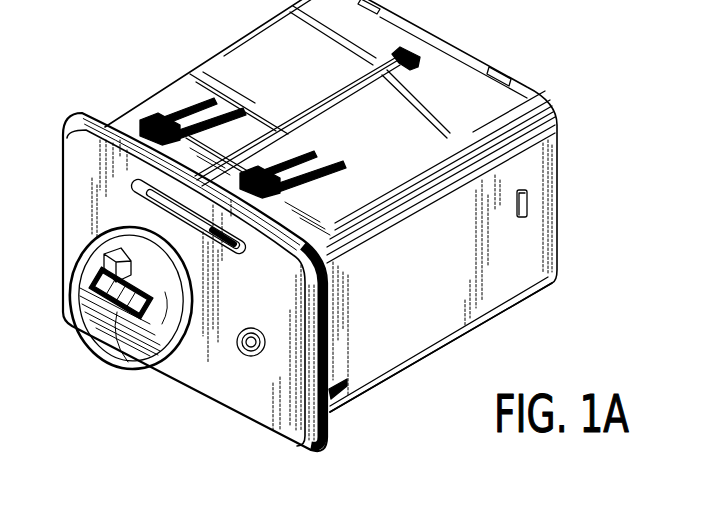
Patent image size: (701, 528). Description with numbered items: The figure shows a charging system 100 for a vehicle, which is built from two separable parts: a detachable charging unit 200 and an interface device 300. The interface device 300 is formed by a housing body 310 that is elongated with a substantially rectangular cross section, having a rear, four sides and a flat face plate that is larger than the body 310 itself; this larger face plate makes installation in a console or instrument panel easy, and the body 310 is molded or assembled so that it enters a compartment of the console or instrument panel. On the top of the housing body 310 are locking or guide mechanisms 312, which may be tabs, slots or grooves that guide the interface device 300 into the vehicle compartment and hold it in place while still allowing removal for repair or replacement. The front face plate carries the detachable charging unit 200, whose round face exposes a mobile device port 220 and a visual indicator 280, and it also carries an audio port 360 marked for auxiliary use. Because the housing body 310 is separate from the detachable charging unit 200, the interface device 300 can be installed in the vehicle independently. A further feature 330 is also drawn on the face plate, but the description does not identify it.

The charging system 100 is at (110, 45).
The detachable charging unit 200 is at (78, 308).
The mobile device port 220 is at (118, 338).
The visual indicator 280 is at (100, 257).
The interface device 300 is at (604, 262).
The housing body 310 is at (371, 358).
The locking or guide mechanisms 312 is at (392, 223).
The card slot 330 is at (245, 250).
The audio port 360 is at (243, 356).